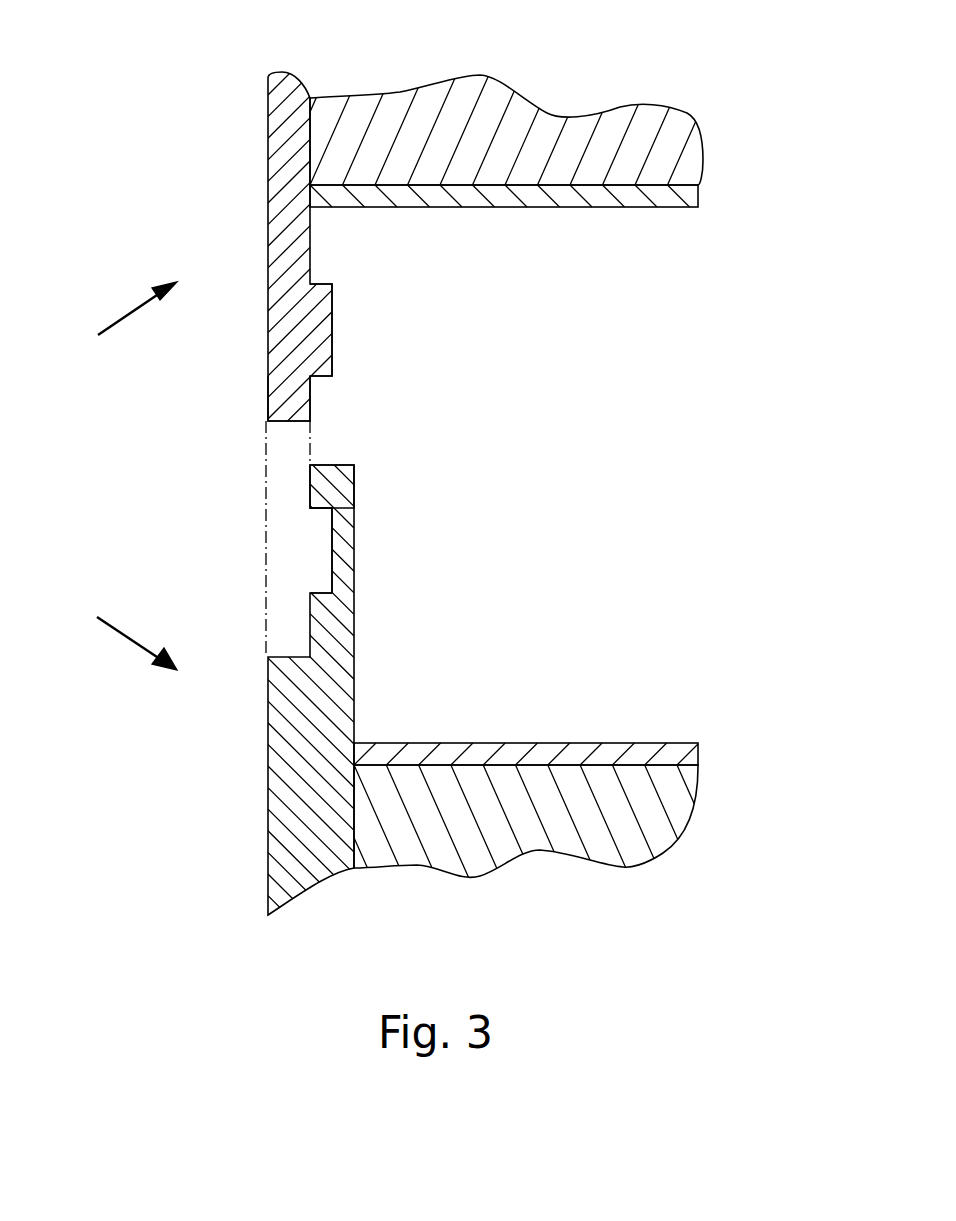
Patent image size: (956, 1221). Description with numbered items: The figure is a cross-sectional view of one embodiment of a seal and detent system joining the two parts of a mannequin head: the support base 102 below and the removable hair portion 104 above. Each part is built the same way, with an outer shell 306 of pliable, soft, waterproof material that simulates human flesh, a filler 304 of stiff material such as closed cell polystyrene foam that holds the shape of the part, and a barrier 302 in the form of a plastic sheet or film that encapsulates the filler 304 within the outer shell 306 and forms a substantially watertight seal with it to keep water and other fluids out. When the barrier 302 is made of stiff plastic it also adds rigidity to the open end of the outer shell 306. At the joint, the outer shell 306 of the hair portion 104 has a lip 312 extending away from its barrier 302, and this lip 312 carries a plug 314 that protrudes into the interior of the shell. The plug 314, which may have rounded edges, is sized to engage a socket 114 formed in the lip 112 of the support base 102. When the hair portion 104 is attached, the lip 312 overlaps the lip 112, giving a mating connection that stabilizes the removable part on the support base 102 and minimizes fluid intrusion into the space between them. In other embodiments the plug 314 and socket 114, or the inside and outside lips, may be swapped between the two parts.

The support base 102 is at (112, 630).
The hair portion 104 is at (113, 317).
The lip 112 is at (354, 487).
The socket 114 is at (332, 527).
The barrier 302 is at (583, 207).
The filler 304 is at (703, 160).
The outer shell 306 is at (268, 226).
The lip 312 is at (268, 360).
The plug 314 is at (332, 327).